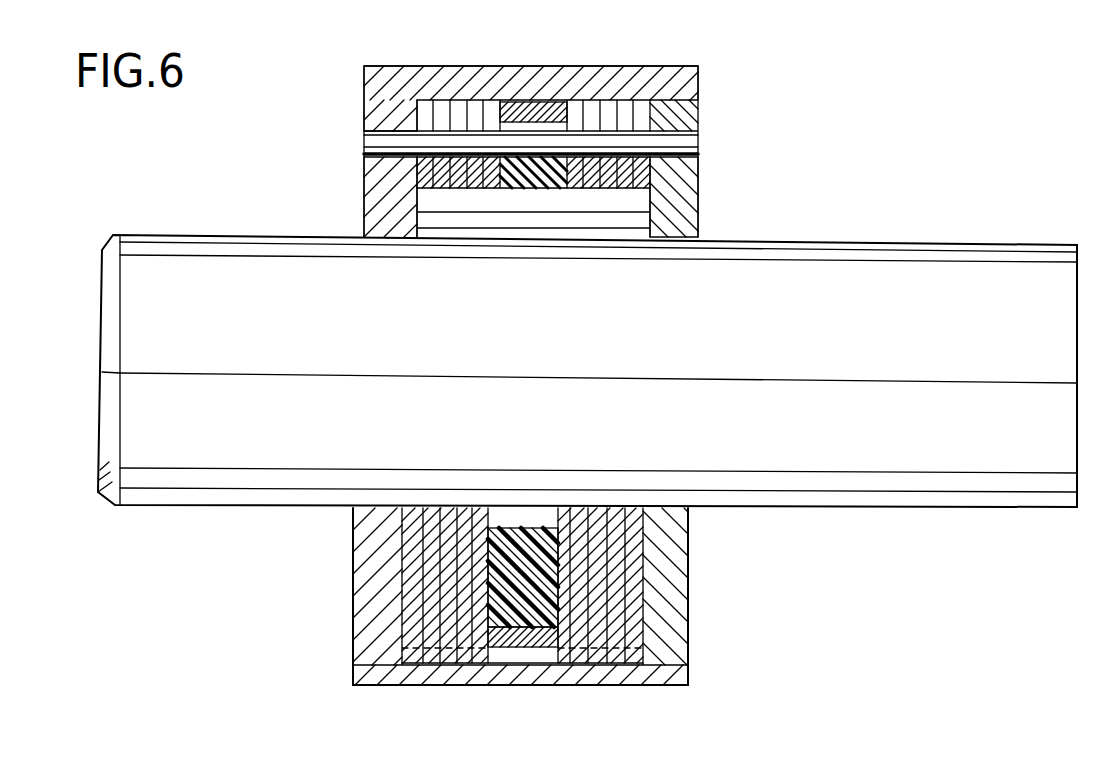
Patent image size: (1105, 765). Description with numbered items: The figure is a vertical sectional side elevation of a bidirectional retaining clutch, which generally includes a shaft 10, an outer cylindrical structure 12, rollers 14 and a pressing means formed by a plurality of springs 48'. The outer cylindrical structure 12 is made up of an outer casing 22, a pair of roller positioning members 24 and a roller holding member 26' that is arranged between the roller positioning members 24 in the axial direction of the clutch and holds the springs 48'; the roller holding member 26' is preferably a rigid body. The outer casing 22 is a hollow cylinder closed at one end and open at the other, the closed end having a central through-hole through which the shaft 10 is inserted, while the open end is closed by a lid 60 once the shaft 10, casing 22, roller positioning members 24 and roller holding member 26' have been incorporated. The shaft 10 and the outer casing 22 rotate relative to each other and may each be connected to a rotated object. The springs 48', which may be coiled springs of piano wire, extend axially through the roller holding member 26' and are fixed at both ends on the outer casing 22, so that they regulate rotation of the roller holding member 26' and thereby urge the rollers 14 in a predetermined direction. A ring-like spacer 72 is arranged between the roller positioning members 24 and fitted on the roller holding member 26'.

The shaft 10 is at (860, 282).
The outer cylindrical structure 12 is at (700, 64).
The rollers 14 is at (430, 200).
The outer casing 22 is at (436, 76).
The roller positioning members 24 is at (428, 628).
The roller holding member 26' is at (409, 587).
The springs 48' is at (569, 110).
The lid 60 is at (685, 193).
The ring-like spacer 72 is at (543, 102).